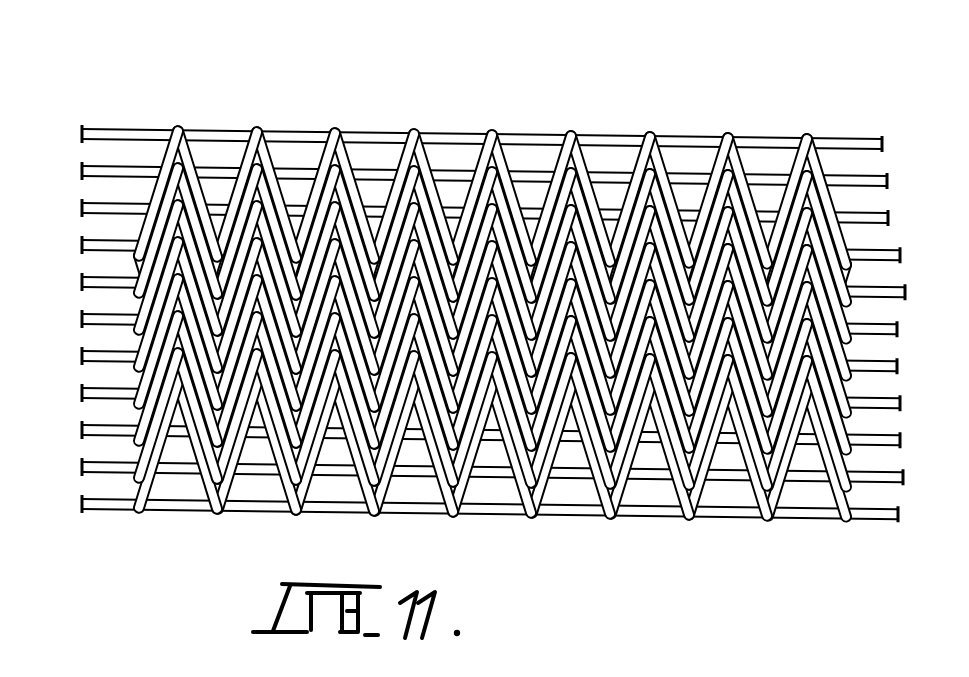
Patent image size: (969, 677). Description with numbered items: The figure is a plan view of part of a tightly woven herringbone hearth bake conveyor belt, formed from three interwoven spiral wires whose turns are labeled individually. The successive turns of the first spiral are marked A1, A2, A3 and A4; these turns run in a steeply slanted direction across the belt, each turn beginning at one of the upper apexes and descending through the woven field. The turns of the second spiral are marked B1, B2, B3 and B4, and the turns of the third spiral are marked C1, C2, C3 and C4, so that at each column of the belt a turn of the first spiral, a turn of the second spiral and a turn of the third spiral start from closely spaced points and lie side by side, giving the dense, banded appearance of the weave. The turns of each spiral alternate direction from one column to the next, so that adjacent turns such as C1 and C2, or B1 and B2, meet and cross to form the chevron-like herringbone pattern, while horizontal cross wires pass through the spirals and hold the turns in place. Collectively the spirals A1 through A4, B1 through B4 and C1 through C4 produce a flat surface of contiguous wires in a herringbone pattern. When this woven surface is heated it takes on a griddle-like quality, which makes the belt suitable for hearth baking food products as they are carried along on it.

The first turn of first spiral A1 is at (173, 203).
The second turn of first spiral A2 is at (260, 207).
The third turn of first spiral A3 is at (340, 207).
The fourth turn of first spiral A4 is at (433, 187).
The first turn of second spiral B1 is at (173, 162).
The second turn of second spiral B2 is at (253, 167).
The third turn of second spiral B3 is at (338, 173).
The fourth turn of second spiral B4 is at (415, 173).
The first turn of third spiral C1 is at (183, 125).
The second turn of third spiral C2 is at (258, 125).
The third turn of third spiral C3 is at (335, 128).
The fourth turn of third spiral C4 is at (415, 128).